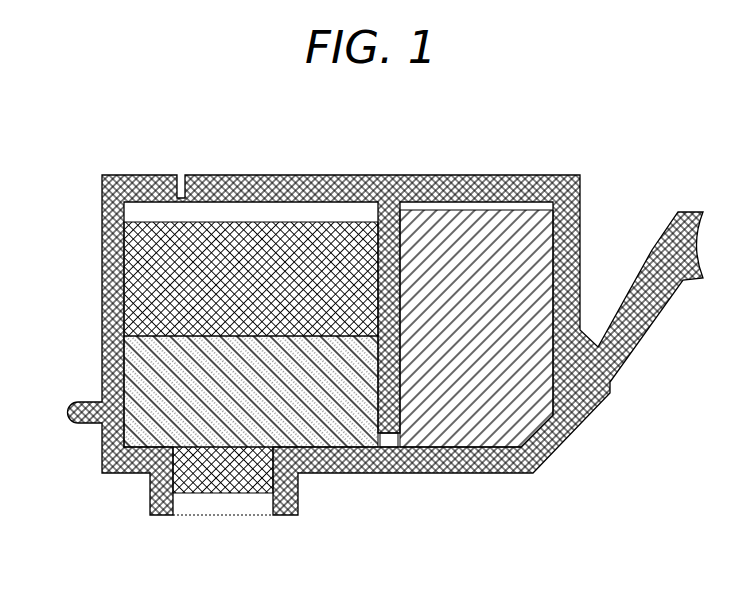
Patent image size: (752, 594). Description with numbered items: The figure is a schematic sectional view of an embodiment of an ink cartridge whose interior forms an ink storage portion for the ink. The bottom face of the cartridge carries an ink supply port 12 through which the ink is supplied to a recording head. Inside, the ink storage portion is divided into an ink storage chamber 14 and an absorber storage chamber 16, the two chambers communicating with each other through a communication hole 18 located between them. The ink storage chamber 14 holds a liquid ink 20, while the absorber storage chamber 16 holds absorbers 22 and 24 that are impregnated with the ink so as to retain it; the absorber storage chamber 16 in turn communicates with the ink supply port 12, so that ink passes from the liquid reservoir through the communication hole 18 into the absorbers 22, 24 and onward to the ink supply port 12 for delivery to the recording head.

The ink supply port 12 is at (227, 505).
The ink storage chamber 14 is at (520, 205).
The absorber storage chamber 16 is at (237, 216).
The communication hole 18 is at (398, 445).
The liquid ink 20 is at (497, 417).
The absorber 22 is at (125, 372).
The absorber 24 is at (125, 272).